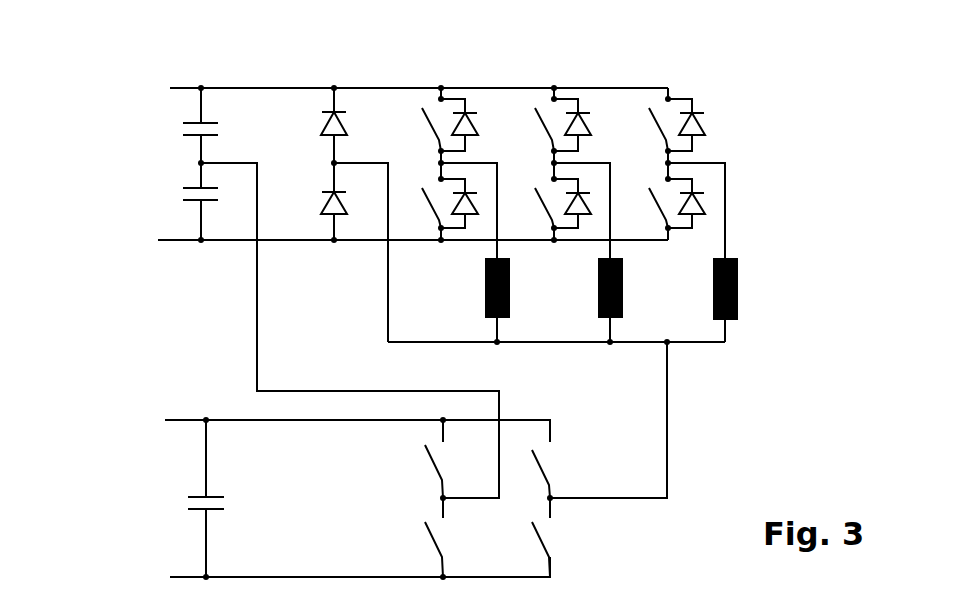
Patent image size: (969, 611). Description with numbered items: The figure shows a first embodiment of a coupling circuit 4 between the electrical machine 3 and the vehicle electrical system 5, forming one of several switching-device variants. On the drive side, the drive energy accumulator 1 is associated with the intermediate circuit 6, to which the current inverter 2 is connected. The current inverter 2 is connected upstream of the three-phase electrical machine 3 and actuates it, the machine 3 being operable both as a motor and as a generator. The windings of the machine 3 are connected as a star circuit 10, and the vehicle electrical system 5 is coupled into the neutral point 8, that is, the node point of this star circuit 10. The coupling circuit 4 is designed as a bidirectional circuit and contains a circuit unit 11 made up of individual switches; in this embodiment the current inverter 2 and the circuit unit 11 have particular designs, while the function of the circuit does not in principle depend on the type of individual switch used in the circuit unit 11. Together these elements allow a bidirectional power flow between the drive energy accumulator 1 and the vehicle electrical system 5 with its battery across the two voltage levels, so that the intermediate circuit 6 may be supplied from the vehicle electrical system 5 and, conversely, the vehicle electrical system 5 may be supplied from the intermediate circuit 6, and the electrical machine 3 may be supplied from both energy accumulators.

The drive energy accumulator 1 is at (117, 198).
The current inverter 2 is at (603, 80).
The three-phase electrical machine 3 is at (755, 312).
The coupling circuit 4 is at (237, 355).
The vehicle electrical system 5 is at (125, 502).
The intermediate circuit 6 is at (173, 130).
The neutral point 8 is at (680, 355).
The star circuit 10 is at (710, 343).
The circuit unit 11 is at (562, 532).